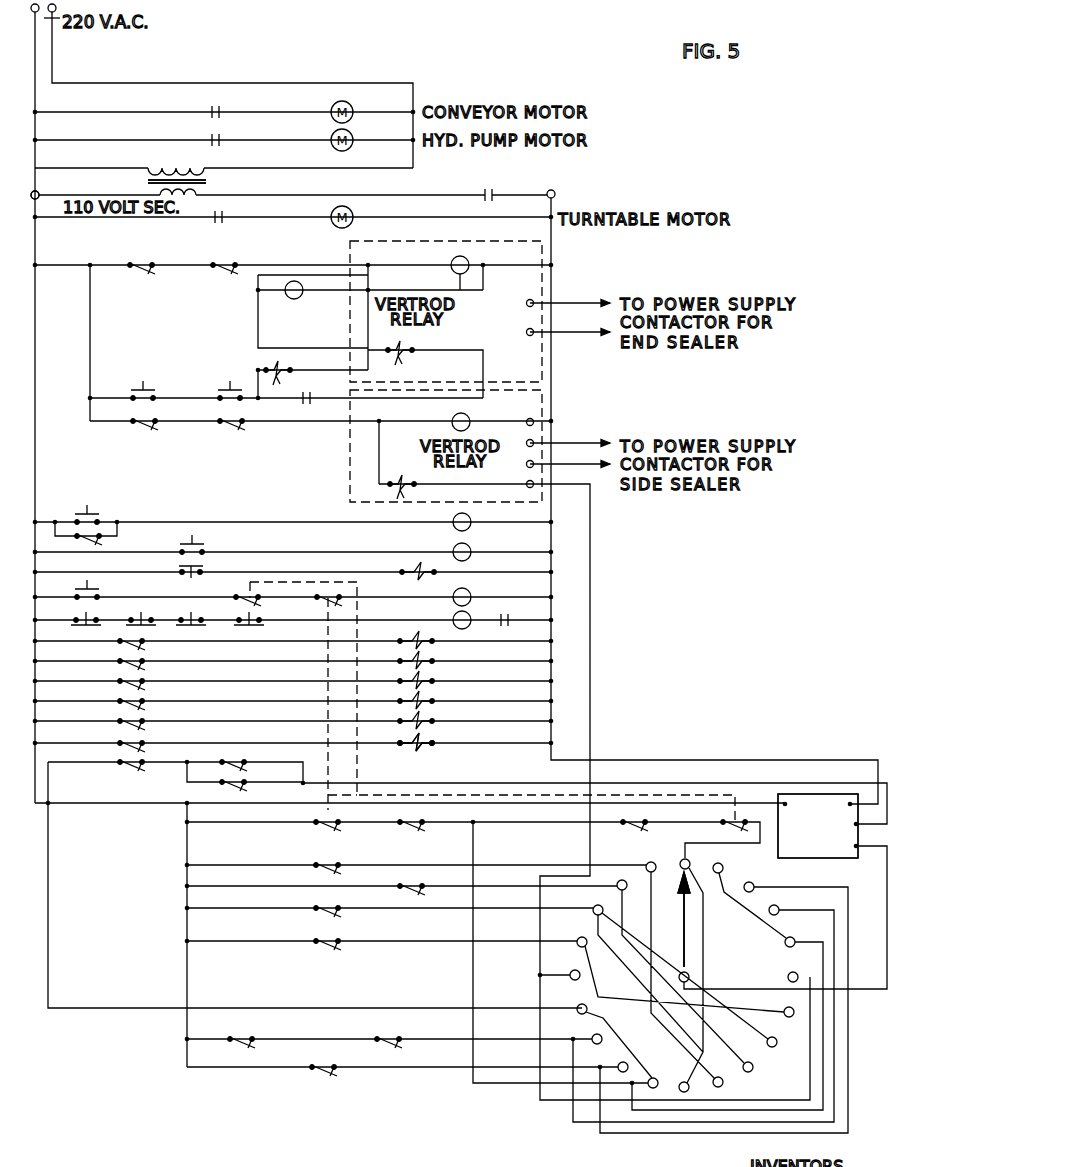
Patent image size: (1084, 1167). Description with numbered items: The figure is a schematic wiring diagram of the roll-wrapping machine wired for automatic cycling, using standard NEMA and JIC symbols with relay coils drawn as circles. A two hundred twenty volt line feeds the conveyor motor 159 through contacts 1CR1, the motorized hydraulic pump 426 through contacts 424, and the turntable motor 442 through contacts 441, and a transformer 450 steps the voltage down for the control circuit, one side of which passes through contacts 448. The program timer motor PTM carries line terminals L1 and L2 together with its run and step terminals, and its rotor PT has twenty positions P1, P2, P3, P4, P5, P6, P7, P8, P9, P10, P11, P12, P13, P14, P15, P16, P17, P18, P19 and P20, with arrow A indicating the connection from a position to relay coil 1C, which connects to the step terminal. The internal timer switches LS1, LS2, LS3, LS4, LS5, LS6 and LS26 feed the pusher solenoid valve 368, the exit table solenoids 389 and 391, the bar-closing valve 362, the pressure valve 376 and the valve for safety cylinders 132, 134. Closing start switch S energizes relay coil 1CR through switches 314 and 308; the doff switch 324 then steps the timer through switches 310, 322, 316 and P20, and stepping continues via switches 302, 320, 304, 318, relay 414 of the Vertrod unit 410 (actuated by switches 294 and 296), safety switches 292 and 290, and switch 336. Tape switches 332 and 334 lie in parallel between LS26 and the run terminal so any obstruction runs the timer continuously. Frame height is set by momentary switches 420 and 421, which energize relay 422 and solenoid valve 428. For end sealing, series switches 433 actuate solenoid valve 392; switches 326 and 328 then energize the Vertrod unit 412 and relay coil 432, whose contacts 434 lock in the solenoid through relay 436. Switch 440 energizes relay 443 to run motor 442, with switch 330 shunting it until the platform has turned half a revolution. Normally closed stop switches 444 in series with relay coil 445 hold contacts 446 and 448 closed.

The timer motor terminal L1 is at (45, 187).
The timer motor terminal L2 is at (549, 191).
The transformer 450 is at (148, 181).
The contacts 1CR1 is at (220, 108).
The contacts 424 is at (221, 136).
The conveyor motor 159 is at (352, 108).
The motorized hydraulic pump 426 is at (352, 136).
The contacts 448 is at (486, 191).
The contacts 441 is at (224, 222).
The motor 442 is at (352, 213).
The switch 326 is at (141, 269).
The switch 328 is at (224, 269).
The relay coil 432 is at (301, 295).
The solenoid valve 392 is at (282, 371).
The series switches 433 is at (223, 384).
The contacts 434 is at (309, 404).
The relay 436 is at (405, 345).
The switch 294 is at (141, 426).
The switch 296 is at (225, 426).
The Vertrod unit 412 is at (550, 366).
The Vertrod heat control unit 410 is at (550, 406).
The relay 414 is at (404, 484).
The switch 440 is at (98, 514).
The switch 330 is at (103, 538).
The momentary contact switch 420 is at (203, 544).
The momentary contact switch 421 is at (204, 567).
The relay 443 is at (471, 519).
The relay 422 is at (471, 549).
The solenoid valve 428 is at (402, 572).
The start switch S is at (98, 584).
The switch contacts 314 is at (240, 596).
The switch contacts 308 is at (315, 600).
The relay coil 1CR is at (469, 596).
The stop switches 444 is at (235, 614).
The relay coil 445 is at (467, 628).
The contacts 446 is at (506, 605).
The internal timer switch LS1 is at (118, 644).
The internal timer switch LS2 is at (118, 664).
The internal timer switch LS3 is at (118, 684).
The internal timer switch LS4 is at (118, 704).
The internal timer switch LS5 is at (118, 724).
The internal timer switch LS26 is at (118, 746).
The internal timer switch LS6 is at (118, 765).
The pusher solenoid valve 368 is at (400, 641).
The solenoid 389 is at (400, 661).
The solenoid valve 362 is at (400, 681).
The solenoid valve 376 is at (400, 701).
The solenoid 391 is at (400, 721).
The cylinder 132 is at (412, 745).
The cylinder 134 is at (396, 758).
The tape switch 332 is at (234, 763).
The tape switch 334 is at (240, 786).
The switch 310 is at (318, 825).
The switch 322 is at (402, 826).
The doff switch 324 is at (636, 822).
The switch 316 is at (732, 825).
The contacts 302 is at (318, 868).
The switch 304 is at (318, 908).
The switch 320 is at (402, 889).
The switch 318 is at (318, 944).
The safety switch 292 is at (236, 1029).
The safety switch 290 is at (376, 1038).
The switch 336 is at (312, 1070).
The timer motor PTM is at (800, 860).
The program timer rotor PT is at (732, 952).
The arrow A is at (682, 920).
The relay coil 1C is at (690, 977).
The timer position P1 is at (648, 864).
The timer position P2 is at (626, 889).
The timer position P3 is at (595, 907).
The timer position P4 is at (579, 938).
The timer position P5 is at (572, 970).
The timer position P6 is at (578, 1005).
The timer position P7 is at (593, 1036).
The timer position P8 is at (619, 1064).
The timer position P9 is at (652, 1130).
The timer position P10 is at (676, 1135).
The timer position P11 is at (723, 1083).
The timer position P12 is at (754, 1067).
The timer position P13 is at (775, 1038).
The timer position P14 is at (795, 1003).
The timer position P15 is at (793, 972).
The timer position P16 is at (793, 937).
The timer position P17 is at (778, 907).
The timer position P18 is at (755, 885).
The timer position P19 is at (724, 866).
The timer position P20 is at (689, 861).